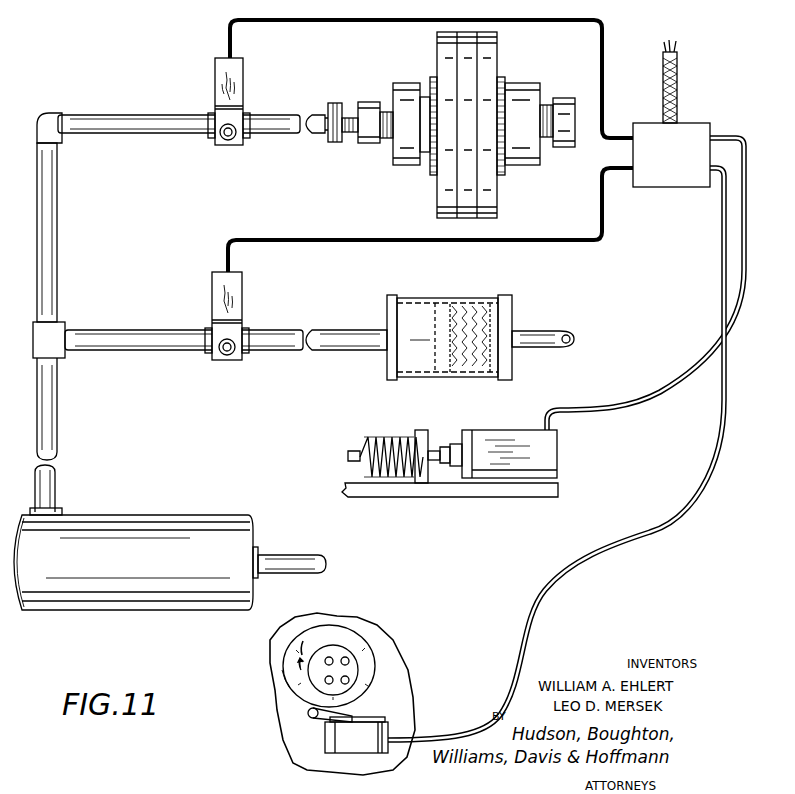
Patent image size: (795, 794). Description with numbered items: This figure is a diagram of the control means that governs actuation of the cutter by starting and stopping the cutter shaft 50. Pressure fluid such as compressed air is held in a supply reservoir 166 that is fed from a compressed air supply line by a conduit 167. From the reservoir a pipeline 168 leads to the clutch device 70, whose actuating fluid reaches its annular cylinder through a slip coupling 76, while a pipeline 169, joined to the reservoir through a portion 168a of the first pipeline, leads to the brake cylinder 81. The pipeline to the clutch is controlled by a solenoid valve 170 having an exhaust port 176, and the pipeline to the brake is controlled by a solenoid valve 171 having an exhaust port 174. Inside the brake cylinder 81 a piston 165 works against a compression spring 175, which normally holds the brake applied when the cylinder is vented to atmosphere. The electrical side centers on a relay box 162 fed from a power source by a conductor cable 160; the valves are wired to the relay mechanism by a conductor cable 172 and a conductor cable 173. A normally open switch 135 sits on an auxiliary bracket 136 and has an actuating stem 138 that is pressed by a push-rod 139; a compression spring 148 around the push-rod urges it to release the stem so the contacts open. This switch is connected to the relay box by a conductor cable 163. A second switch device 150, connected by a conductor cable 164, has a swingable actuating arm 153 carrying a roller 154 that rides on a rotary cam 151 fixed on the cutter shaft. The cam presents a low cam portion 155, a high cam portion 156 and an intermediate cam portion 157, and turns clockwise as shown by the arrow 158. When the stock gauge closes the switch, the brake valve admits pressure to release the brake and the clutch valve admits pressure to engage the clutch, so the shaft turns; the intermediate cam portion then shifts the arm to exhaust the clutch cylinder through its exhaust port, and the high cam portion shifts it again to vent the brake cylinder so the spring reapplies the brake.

The cutter shaft 50 is at (355, 668).
The clutch device 70 is at (470, 65).
The slip coupling 76 is at (335, 146).
The brake cylinder 81 is at (428, 302).
The switch 135 is at (562, 460).
The auxiliary bracket 136 is at (515, 492).
The actuating stem 138 is at (444, 468).
The push-rod 139 is at (428, 475).
The compression spring 148 is at (358, 462).
The second switch device 150 is at (330, 745).
The rotary cam 151 is at (348, 640).
The actuating arm 153 is at (320, 725).
The roller 154 is at (310, 716).
The low cam portion 155 is at (360, 652).
The high cam portion 156 is at (282, 672).
The intermediate cam portion 157 is at (300, 645).
The arrow 158 is at (300, 655).
The conductor cable 160 is at (677, 88).
The relay box 162 is at (695, 127).
The conductor cable 163 is at (640, 398).
The conductor cable 164 is at (712, 460).
The piston 165 is at (444, 345).
The supply reservoir 166 is at (135, 515).
The conduit 167 is at (292, 555).
The pipeline 168 is at (101, 135).
The pipeline portion 168a is at (50, 417).
The pipeline 169 is at (110, 345).
The solenoid valve 170 is at (222, 114).
The solenoid valve 171 is at (222, 328).
The conductor cable 172 is at (300, 23).
The conductor cable 173 is at (292, 243).
The exhaust port 174 is at (226, 358).
The compression spring 175 is at (470, 370).
The exhaust port 176 is at (228, 141).